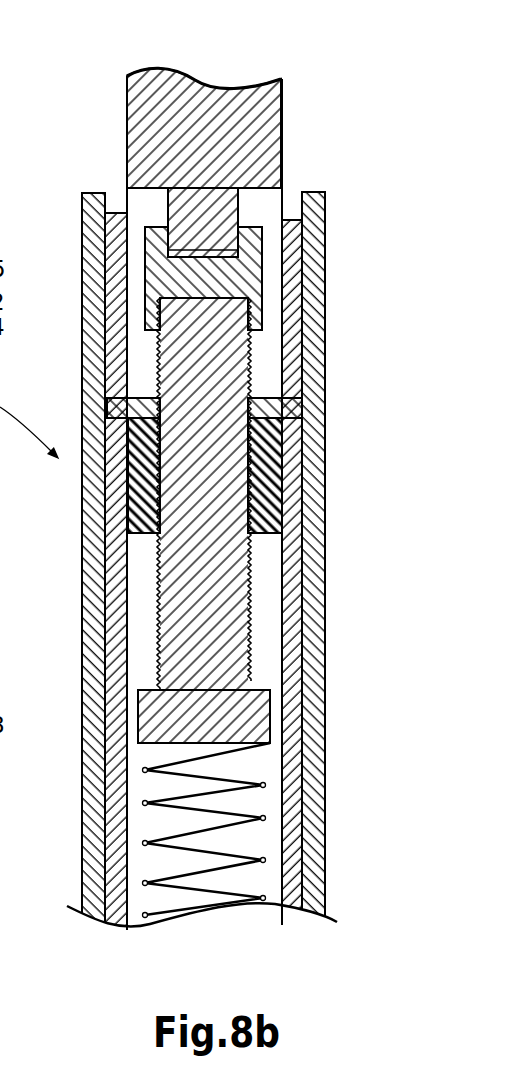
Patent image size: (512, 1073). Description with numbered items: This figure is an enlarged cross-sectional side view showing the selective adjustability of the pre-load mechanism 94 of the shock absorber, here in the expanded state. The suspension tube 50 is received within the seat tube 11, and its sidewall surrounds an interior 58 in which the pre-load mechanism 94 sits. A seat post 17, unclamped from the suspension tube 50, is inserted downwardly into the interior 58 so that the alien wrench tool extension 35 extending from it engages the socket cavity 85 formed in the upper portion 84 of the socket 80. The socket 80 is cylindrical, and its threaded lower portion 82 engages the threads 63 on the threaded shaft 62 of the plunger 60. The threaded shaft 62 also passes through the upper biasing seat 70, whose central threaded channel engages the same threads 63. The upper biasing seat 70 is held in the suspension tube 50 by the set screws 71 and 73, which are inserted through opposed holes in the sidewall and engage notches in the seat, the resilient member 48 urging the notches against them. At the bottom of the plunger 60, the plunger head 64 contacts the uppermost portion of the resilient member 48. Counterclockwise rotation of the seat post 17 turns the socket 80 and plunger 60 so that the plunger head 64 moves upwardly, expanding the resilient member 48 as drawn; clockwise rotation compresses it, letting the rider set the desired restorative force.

The seat post 17 is at (212, 88).
The alien wrench tool extension 35 is at (218, 207).
The upper portion 84 is at (240, 245).
The threaded lower portion 82 is at (260, 280).
The socket 80 is at (180, 272).
The socket cavity 85 is at (182, 255).
The pre-load mechanism 94 is at (268, 380).
The set screw 71 is at (112, 395).
The set screw 73 is at (300, 398).
The upper biasing seat 70 is at (286, 455).
The plunger 60 is at (134, 582).
The threads 63 is at (250, 610).
The threaded shaft 62 is at (158, 640).
The seat tube 11 is at (312, 633).
The interior 58 is at (267, 672).
The plunger head 64 is at (160, 738).
The suspension tube 50 is at (114, 916).
The resilient member 48 is at (212, 893).